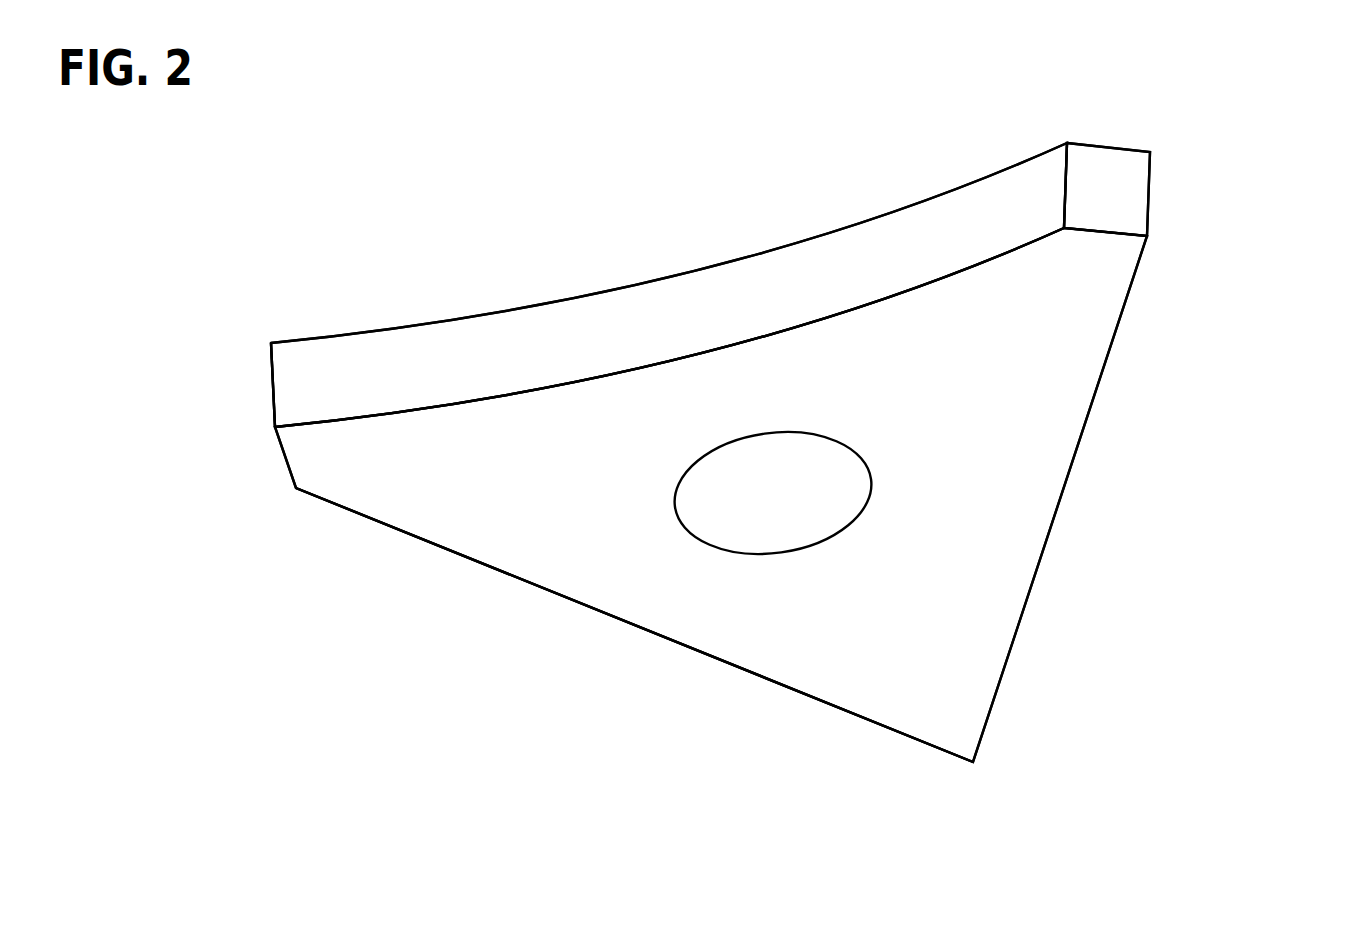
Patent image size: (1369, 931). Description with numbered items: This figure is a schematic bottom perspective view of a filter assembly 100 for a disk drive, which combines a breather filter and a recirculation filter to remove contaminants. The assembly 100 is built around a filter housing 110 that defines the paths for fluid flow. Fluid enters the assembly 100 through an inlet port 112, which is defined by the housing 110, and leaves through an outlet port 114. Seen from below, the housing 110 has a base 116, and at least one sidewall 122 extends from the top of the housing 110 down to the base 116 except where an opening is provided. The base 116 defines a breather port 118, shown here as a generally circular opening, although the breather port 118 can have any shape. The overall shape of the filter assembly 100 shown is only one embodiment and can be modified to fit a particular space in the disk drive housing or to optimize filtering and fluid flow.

The filter assembly 100 is at (645, 187).
The filter housing 110 is at (461, 568).
The inlet port 112 is at (1120, 197).
The outlet port 114 is at (262, 407).
The base 116 is at (835, 587).
The breather port 118 is at (810, 487).
The sidewall 122 is at (685, 337).